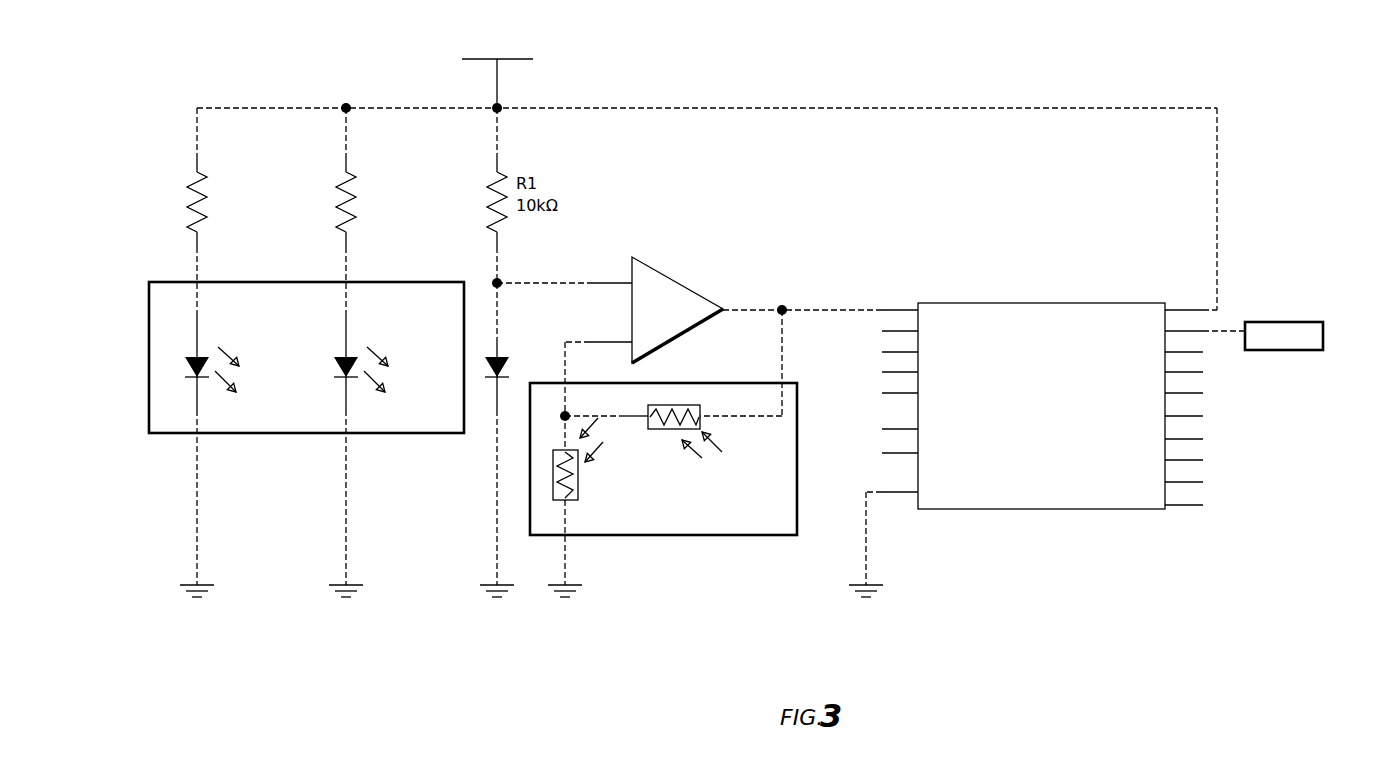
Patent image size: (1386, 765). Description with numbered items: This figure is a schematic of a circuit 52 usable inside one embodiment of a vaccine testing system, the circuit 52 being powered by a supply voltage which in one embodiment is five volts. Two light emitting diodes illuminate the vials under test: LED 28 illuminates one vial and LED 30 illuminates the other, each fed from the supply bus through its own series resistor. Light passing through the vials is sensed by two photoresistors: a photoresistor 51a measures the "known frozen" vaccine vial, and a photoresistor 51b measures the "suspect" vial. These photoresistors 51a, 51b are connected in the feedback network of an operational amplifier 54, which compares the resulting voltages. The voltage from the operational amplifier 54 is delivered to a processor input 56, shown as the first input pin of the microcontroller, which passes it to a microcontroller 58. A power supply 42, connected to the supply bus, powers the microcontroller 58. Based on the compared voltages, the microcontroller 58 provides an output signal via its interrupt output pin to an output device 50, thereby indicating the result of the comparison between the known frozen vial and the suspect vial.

The LED 28 is at (197, 334).
The LED 30 is at (346, 334).
The power supply 42 is at (1153, 303).
The output device 50 is at (1294, 350).
The photoresistor 51a is at (568, 500).
The photoresistor 51b is at (700, 418).
The circuit 52 is at (932, 86).
The operational amplifier 54 is at (679, 284).
The processor input 56 is at (918, 303).
The microcontroller 58 is at (1033, 426).